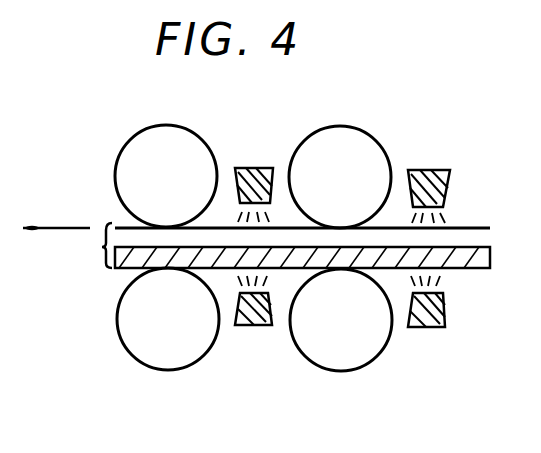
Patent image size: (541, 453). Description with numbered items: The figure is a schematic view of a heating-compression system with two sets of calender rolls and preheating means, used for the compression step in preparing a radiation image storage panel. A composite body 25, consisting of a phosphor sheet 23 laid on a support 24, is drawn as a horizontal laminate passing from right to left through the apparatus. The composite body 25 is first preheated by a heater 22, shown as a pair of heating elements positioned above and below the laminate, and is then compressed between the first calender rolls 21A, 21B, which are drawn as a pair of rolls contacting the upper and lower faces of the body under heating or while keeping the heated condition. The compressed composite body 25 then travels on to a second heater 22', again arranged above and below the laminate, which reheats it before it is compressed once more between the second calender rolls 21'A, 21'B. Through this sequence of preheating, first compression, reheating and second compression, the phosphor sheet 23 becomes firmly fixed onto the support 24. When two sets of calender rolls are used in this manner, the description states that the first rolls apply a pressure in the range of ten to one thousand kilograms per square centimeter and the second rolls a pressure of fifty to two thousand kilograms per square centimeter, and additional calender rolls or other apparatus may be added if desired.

The second calender roll 21'A is at (162, 156).
The first calender roll 21A is at (340, 137).
The second calender roll 21'B is at (156, 339).
The first calender roll 21B is at (338, 363).
The heater 22' is at (250, 251).
The heater 22 is at (429, 251).
The phosphor sheet 23 is at (478, 238).
The support 24 is at (490, 265).
The composite body 25 is at (93, 247).